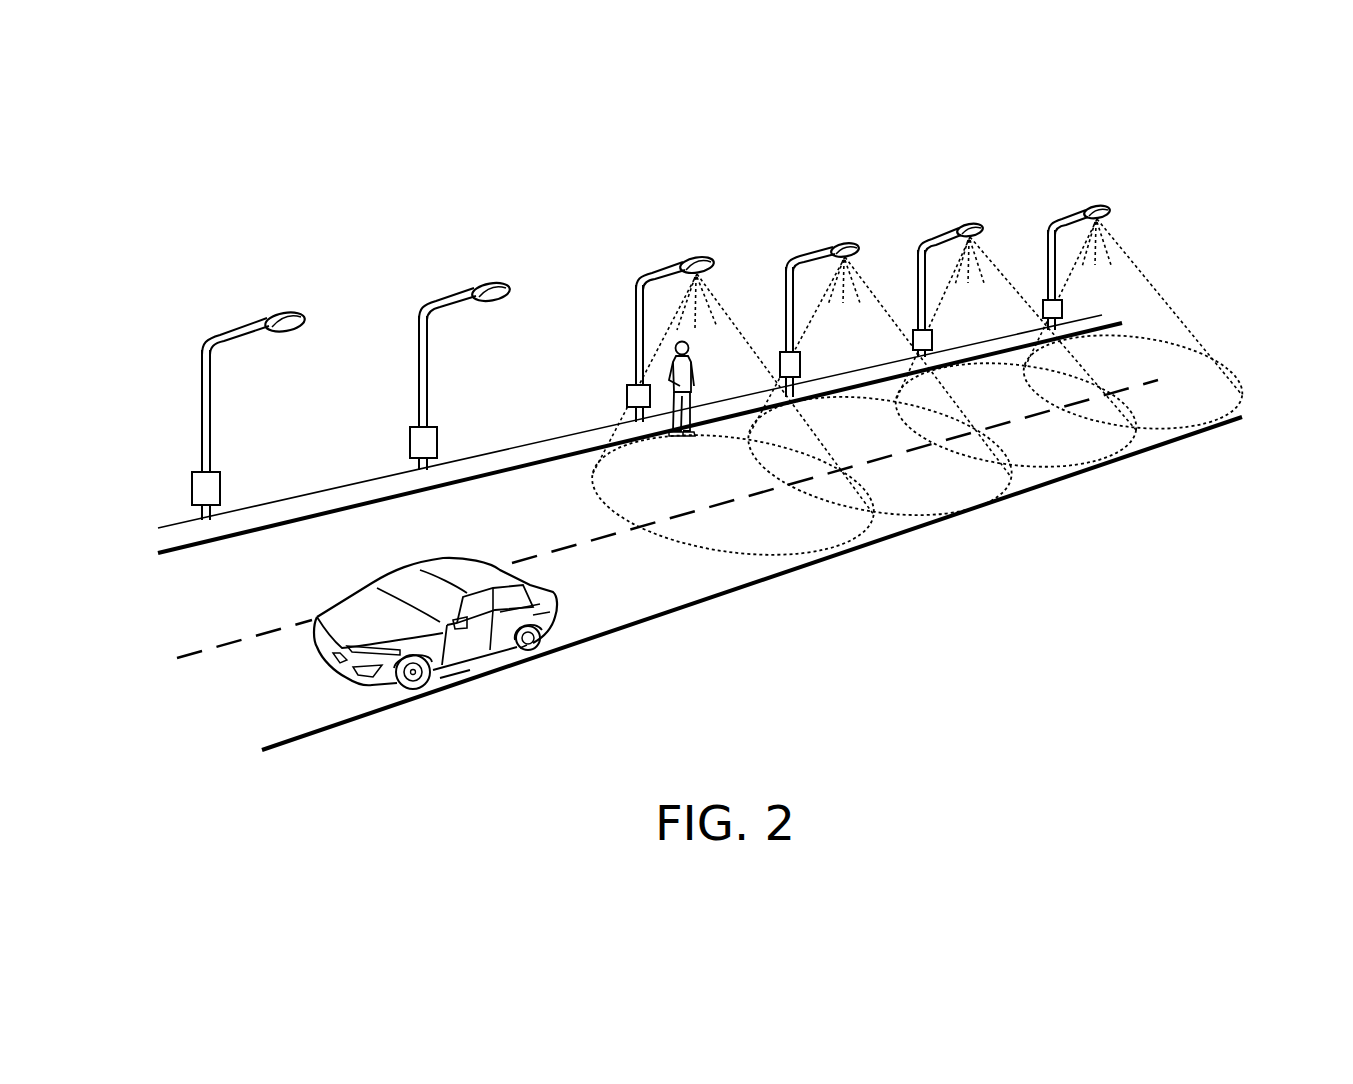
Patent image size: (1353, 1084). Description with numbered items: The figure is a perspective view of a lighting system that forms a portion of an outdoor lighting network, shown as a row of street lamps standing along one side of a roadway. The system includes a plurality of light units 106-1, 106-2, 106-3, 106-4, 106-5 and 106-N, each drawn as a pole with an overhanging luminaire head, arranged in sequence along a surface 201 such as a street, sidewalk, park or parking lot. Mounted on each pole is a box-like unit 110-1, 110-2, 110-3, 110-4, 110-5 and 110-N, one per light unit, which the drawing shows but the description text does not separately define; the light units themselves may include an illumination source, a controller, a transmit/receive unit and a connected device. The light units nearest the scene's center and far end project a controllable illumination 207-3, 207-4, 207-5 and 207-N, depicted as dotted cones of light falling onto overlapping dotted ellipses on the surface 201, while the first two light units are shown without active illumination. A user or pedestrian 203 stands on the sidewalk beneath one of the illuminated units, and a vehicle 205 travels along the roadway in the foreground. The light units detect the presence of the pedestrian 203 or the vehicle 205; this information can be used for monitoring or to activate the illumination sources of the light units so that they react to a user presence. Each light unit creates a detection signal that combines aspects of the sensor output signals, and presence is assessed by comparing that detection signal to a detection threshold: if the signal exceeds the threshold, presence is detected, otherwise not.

The light unit 106-1 is at (277, 313).
The light unit 106-2 is at (488, 283).
The light unit 106-3 is at (690, 258).
The light unit 106-4 is at (835, 245).
The light unit 106-5 is at (963, 225).
The light unit 106-N is at (1090, 207).
The node / controller 110-1 is at (192, 488).
The node / controller 110-2 is at (410, 442).
The node / controller 110-3 is at (627, 397).
The node / controller 110-4 is at (780, 363).
The node / controller 110-5 is at (912, 340).
The node / controller 110-N is at (1043, 310).
The surface 201 is at (897, 521).
The user/pedestrian 203 is at (668, 375).
The vehicle 205 is at (463, 645).
The controllable illumination 207-3 is at (820, 543).
The controllable illumination 207-4 is at (955, 497).
The controllable illumination 207-5 is at (1077, 455).
The controllable illumination 207-N is at (1190, 413).